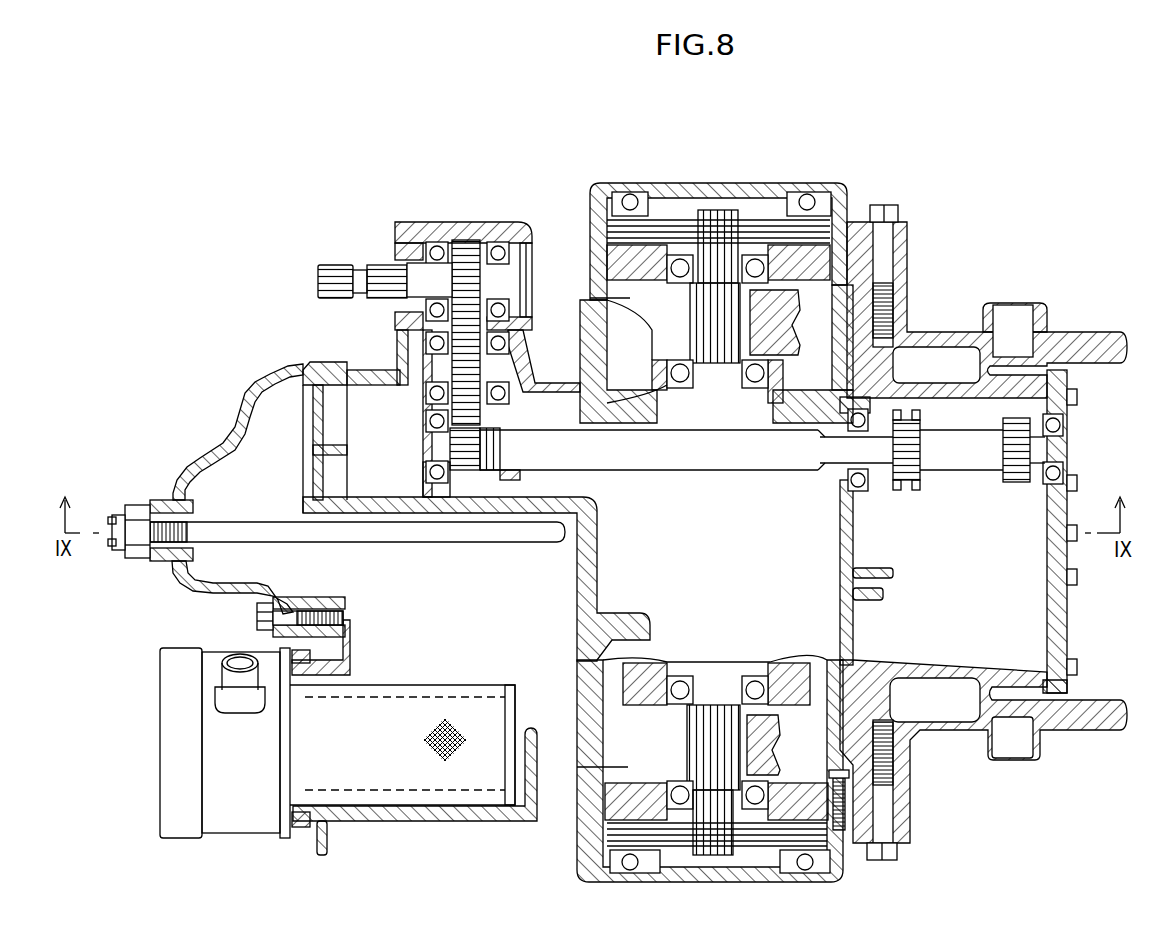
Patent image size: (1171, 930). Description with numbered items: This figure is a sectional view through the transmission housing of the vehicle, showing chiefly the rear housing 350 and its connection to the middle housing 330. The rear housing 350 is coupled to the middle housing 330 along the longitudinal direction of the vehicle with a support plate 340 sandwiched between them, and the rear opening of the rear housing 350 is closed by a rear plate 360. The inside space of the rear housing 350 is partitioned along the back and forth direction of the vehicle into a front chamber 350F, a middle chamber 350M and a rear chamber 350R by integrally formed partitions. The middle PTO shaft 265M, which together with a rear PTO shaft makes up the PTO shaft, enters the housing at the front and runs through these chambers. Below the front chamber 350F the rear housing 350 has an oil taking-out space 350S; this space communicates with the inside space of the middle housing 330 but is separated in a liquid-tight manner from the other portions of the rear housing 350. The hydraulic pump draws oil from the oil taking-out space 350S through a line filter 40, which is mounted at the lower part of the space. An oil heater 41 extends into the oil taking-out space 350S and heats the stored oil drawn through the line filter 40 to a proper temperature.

The middle PTO shaft 265M is at (338, 268).
The support plate 340 is at (327, 360).
The middle housing 330 is at (252, 380).
The oil heater 41 is at (255, 530).
The line filter 40 is at (378, 762).
The rear housing 350 is at (947, 730).
The front chamber 350F is at (407, 448).
The oil taking-out space 350S is at (488, 617).
The middle chamber 350M is at (747, 560).
The rear chamber 350R is at (980, 572).
The rear plate 360 is at (1073, 607).